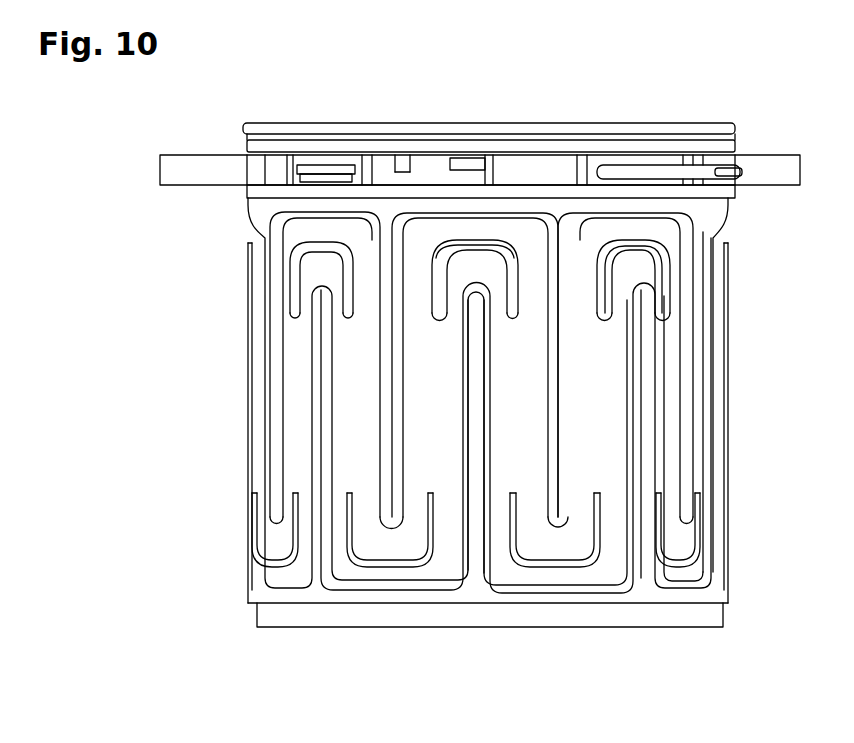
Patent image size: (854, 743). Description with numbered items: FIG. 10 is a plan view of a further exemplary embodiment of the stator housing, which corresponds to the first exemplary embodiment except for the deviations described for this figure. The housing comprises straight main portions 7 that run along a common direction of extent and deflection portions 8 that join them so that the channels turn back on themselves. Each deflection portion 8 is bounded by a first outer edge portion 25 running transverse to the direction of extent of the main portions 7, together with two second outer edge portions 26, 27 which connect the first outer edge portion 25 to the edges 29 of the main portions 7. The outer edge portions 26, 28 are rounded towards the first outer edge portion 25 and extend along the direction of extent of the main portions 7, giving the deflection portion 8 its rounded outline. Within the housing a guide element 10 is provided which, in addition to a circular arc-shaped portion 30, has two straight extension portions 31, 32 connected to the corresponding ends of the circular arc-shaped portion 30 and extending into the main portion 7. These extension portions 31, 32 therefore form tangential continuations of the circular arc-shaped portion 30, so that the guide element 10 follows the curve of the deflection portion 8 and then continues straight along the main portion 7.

The main portion 7 is at (432, 395).
The deflection portion 8 is at (532, 228).
The guide element 10 is at (432, 283).
The first outer edge portion 25 is at (456, 213).
The second outer edge portion 26 is at (396, 258).
The second outer edge portion 27 is at (712, 250).
The outer edge portion 28 is at (397, 440).
The edge of main portion 29 is at (553, 462).
The circular arc-shaped portion 30 is at (519, 238).
The extension portion 31 is at (447, 313).
The extension portion 32 is at (517, 305).